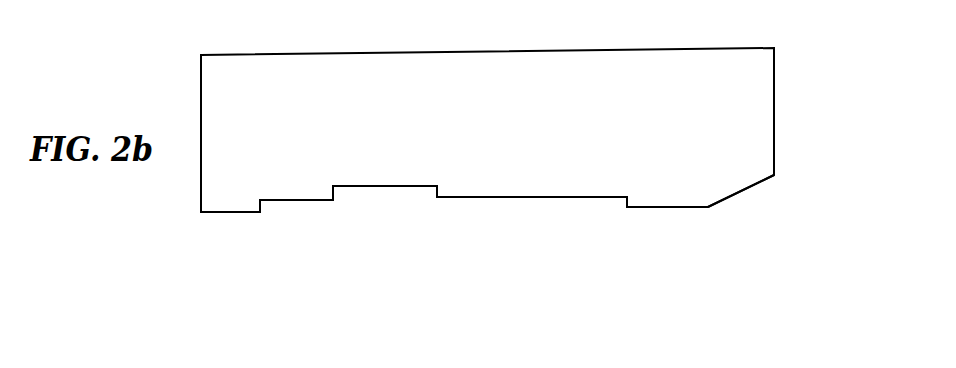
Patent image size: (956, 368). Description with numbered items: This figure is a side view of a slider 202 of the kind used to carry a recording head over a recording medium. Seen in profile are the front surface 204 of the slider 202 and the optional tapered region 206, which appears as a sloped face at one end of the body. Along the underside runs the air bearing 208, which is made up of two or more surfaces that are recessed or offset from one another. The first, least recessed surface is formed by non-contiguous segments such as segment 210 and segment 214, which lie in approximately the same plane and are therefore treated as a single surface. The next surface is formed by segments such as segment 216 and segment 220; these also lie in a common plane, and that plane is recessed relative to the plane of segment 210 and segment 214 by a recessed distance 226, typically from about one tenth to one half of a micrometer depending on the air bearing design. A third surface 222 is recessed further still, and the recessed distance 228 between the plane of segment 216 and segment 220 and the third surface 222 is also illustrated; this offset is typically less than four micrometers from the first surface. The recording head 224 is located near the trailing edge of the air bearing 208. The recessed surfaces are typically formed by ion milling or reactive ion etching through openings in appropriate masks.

The slider 202 is at (840, 79).
The front surface 204 is at (775, 125).
The optional tapered region 206 is at (747, 190).
The air bearing 208 is at (276, 281).
The first surface segment 210 is at (670, 208).
The first surface segment 214 is at (236, 213).
The second surface segment 216 is at (535, 198).
The second surface segment 220 is at (297, 200).
The third surface 222 is at (384, 187).
The recording head 224 is at (212, 200).
The recessed distance 226 is at (628, 196).
The recessed distance 228 is at (438, 195).